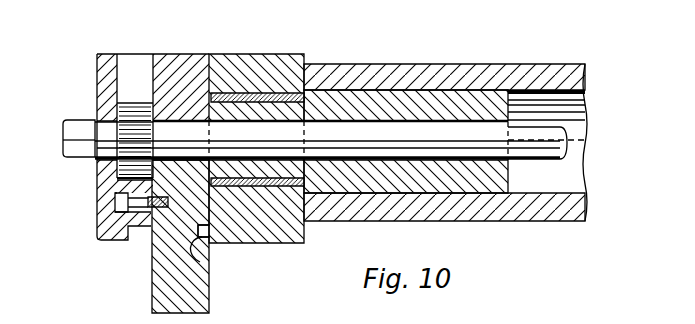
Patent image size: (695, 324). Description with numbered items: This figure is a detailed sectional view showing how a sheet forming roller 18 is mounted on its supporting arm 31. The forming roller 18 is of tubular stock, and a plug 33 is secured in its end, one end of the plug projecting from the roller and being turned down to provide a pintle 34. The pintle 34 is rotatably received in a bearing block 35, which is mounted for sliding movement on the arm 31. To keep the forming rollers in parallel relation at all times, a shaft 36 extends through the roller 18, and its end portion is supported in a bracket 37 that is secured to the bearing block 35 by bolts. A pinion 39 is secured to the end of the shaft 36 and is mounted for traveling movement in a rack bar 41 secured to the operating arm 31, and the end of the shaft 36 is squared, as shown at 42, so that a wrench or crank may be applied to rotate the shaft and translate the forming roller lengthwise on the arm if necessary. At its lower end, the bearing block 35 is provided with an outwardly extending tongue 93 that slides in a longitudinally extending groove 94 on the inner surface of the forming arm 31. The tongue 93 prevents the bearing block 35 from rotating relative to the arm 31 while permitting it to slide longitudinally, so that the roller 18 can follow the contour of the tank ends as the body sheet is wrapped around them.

The sheet forming roller 18 is at (452, 217).
The opposed arm 31 is at (195, 295).
The plug 33 is at (475, 98).
The pintle 34 is at (268, 110).
The bearing block 35 is at (282, 234).
The shaft 36 is at (536, 150).
The bracket 37 is at (97, 197).
The pinion 39 is at (127, 108).
The rack bar 41 is at (140, 226).
The squared end 42 is at (77, 122).
The tongue 93 is at (207, 238).
The groove 94 is at (209, 266).